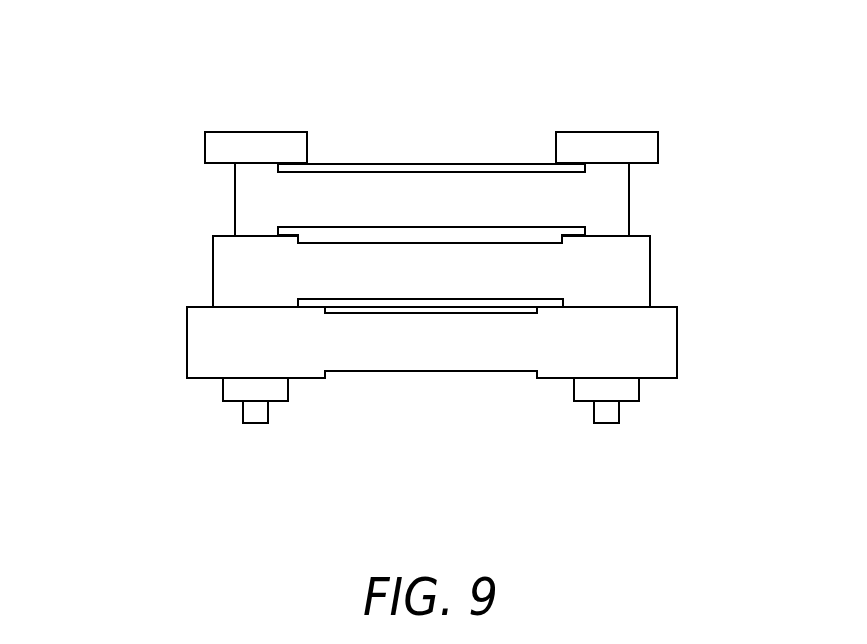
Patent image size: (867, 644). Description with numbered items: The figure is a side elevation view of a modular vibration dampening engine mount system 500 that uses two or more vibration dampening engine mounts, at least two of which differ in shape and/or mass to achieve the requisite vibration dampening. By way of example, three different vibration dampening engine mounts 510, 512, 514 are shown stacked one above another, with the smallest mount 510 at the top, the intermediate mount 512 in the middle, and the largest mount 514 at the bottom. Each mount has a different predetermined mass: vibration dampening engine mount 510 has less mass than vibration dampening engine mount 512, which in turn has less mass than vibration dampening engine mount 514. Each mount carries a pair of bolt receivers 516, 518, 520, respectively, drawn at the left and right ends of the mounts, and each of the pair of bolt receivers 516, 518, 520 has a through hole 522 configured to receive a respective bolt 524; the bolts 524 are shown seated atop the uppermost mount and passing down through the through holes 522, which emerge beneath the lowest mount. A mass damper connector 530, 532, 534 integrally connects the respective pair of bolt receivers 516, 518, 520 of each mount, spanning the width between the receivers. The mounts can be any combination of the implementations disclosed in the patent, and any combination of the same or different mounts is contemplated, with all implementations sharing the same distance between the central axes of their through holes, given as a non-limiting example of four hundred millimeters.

The modular vibration dampening engine mount system 500 is at (124, 78).
The vibration dampening engine mount 510 is at (208, 182).
The vibration dampening engine mount 512 is at (188, 257).
The vibration dampening engine mount 514 is at (168, 332).
The bolt receivers 516 is at (242, 218).
The bolt receivers 518 is at (225, 288).
The bolt receivers 520 is at (195, 367).
The through hole 522 is at (257, 365).
The bolt 524 is at (257, 130).
The mass damper connector 530 is at (453, 181).
The mass damper connector 532 is at (487, 268).
The mass damper connector 534 is at (353, 350).